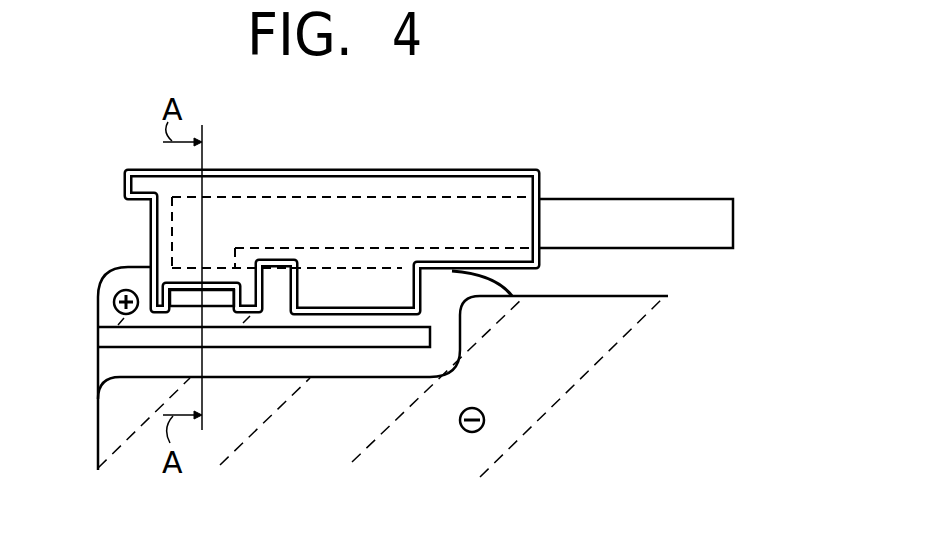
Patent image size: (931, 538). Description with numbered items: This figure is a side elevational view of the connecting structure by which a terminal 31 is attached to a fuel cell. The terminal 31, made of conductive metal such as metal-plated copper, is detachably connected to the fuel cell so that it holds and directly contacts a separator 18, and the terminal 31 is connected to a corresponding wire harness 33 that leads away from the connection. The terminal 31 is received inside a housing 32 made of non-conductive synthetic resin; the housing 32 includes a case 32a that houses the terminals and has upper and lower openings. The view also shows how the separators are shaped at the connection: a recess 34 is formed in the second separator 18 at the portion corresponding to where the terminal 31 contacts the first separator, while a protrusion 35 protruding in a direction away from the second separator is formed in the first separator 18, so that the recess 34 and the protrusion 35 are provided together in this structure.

The separator 18 is at (440, 430).
The terminal 31 is at (213, 297).
The housing 32 is at (385, 292).
The case 32a is at (368, 220).
The wire harness 33 is at (637, 218).
The recess 34 is at (323, 376).
The protrusion 35 is at (467, 273).